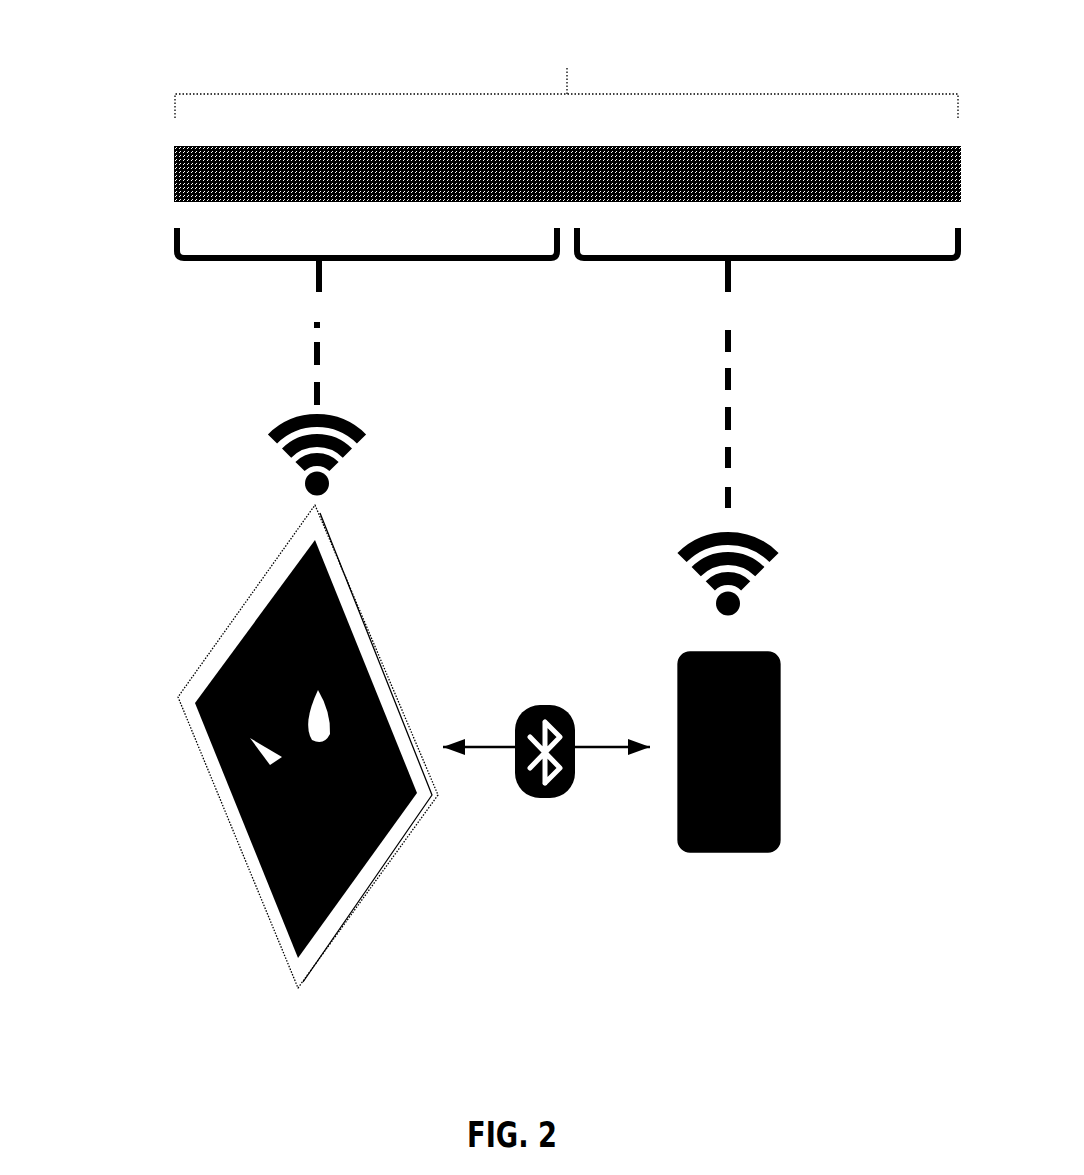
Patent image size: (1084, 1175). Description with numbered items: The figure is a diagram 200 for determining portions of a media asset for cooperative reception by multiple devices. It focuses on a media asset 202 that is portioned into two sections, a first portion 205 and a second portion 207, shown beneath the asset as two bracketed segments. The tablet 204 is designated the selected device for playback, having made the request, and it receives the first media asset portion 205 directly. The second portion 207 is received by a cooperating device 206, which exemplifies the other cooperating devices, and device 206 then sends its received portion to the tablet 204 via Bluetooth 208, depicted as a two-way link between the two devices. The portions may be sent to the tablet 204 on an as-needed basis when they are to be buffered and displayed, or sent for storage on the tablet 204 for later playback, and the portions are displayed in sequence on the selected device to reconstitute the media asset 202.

The diagram 200 is at (77, 31).
The media asset 202 is at (675, 43).
The tablet 204 is at (313, 1038).
The first media asset portion 205 is at (380, 308).
The device 206 is at (742, 1043).
The second media asset portion 207 is at (789, 303).
The Bluetooth 208 is at (563, 836).